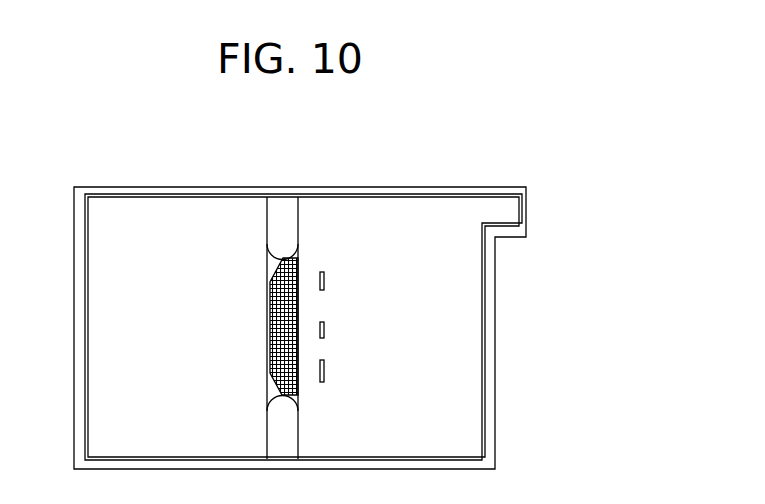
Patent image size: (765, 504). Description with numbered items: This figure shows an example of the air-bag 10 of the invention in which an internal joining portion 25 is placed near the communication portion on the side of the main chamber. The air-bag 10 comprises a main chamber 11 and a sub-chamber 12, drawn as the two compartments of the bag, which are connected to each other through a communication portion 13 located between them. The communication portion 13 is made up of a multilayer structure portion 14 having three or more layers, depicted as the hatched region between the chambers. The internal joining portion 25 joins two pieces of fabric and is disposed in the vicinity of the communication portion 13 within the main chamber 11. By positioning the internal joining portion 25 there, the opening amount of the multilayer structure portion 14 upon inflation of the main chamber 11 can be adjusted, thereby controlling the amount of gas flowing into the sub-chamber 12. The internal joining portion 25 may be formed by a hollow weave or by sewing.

The air-bag 10 is at (495, 337).
The main chamber 11 is at (380, 237).
The sub-chamber 12 is at (133, 248).
The communication portion 13 is at (300, 318).
The multilayer structure portion 14 is at (300, 347).
The internal joining portion 25 is at (324, 275).